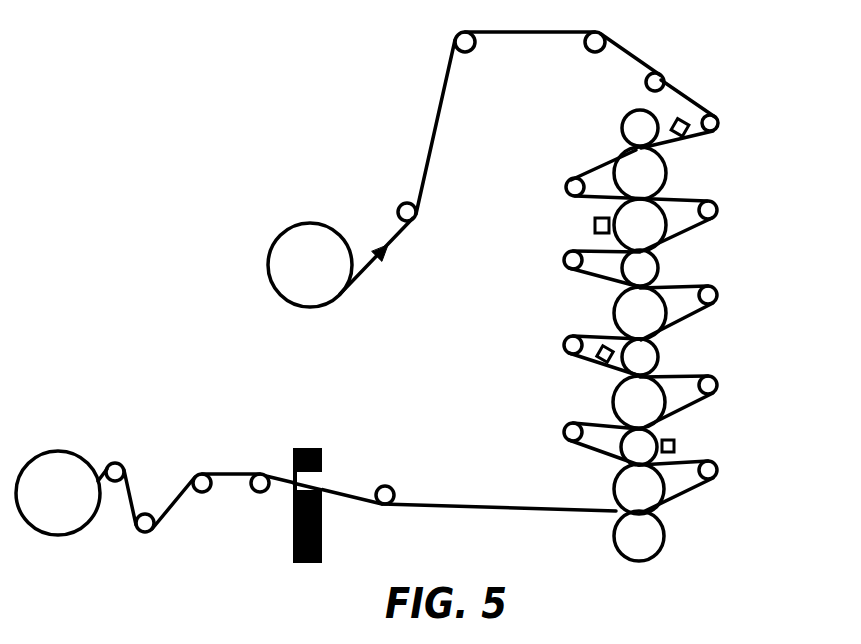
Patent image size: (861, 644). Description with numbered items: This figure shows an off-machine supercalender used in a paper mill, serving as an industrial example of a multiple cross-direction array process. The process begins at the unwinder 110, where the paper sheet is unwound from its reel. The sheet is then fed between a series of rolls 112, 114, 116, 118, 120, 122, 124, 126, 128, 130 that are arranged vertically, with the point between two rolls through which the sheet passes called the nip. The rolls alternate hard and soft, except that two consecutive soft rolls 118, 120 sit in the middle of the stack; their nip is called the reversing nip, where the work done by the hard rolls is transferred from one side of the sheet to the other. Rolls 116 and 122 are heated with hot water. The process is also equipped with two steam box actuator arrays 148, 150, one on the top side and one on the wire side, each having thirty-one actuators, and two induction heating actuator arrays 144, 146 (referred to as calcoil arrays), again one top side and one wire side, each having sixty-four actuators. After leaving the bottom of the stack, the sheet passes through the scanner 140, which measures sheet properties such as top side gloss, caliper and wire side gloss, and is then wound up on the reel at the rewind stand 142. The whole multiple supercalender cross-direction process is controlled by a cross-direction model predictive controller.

The unwinder 110 is at (268, 266).
The roll 112 is at (622, 128).
The roll 114 is at (667, 172).
The roll 116 is at (667, 236).
The soft roll 118 is at (658, 270).
The soft roll 120 is at (666, 306).
The roll 122 is at (658, 360).
The roll 124 is at (665, 403).
The roll 126 is at (620, 448).
The roll 128 is at (665, 490).
The roll 130 is at (665, 543).
The scanner 140 is at (322, 452).
The rewind stand 142 is at (68, 451).
The induction heating actuator array 144 is at (595, 226).
The induction heating actuator array 146 is at (674, 447).
The steam box actuator array 148 is at (718, 124).
The steam box actuator array 150 is at (582, 358).